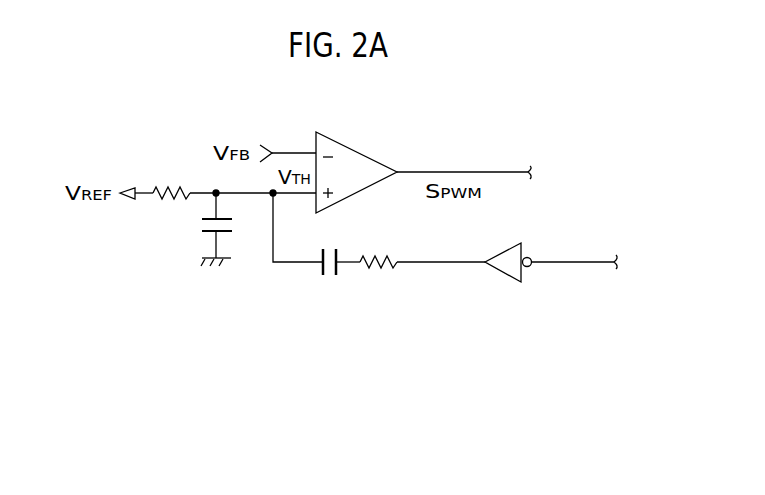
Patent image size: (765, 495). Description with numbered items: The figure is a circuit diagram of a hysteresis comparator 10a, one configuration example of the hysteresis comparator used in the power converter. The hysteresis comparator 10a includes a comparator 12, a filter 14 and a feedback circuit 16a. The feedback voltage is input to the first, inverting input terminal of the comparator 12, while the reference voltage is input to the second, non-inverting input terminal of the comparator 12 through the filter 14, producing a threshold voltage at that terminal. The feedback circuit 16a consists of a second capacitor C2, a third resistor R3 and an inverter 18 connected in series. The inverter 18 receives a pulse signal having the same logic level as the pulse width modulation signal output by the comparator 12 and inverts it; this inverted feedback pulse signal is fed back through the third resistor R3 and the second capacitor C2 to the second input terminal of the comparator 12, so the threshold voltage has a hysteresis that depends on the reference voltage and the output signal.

The hysteresis comparator 10a is at (372, 448).
The comparator 12 is at (345, 140).
The filter 14 is at (243, 278).
The feedback circuit 16a is at (445, 288).
The inverter 18 is at (508, 288).
The second capacitor C2 is at (324, 279).
The third resistor R3 is at (381, 272).